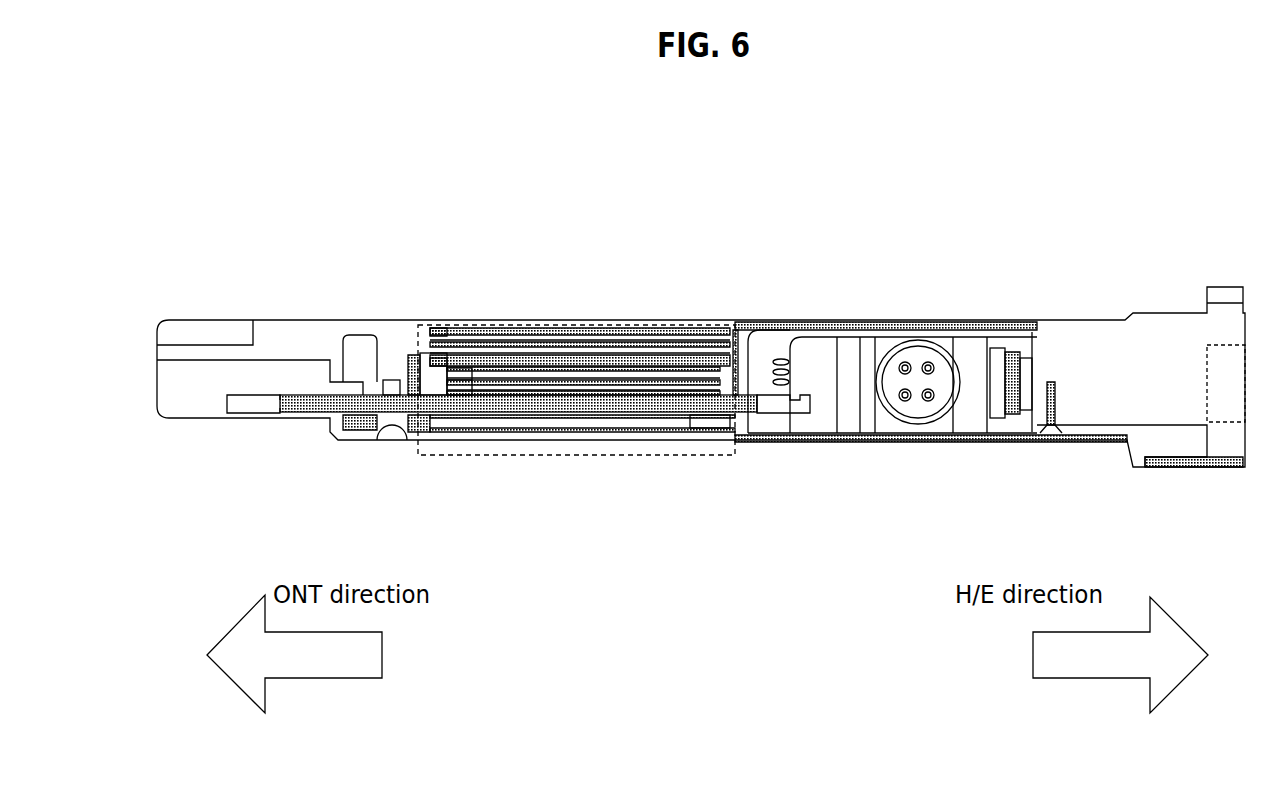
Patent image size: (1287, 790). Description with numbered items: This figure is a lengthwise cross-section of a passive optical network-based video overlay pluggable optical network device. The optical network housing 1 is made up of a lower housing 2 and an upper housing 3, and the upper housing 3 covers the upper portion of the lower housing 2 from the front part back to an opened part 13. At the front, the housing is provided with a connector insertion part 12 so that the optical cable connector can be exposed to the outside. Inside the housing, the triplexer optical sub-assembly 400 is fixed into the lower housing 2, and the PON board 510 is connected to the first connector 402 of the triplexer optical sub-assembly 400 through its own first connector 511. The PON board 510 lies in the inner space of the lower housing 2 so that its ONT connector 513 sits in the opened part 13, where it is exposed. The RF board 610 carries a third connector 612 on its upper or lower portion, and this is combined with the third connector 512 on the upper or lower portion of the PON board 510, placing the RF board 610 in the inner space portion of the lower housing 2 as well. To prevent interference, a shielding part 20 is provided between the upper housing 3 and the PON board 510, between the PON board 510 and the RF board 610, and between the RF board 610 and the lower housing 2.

The optical network housing 1 is at (1160, 265).
The lower housing 2 is at (1076, 348).
The upper housing 3 is at (903, 446).
The connector insertion part 12 is at (1222, 343).
The opened part 13 is at (210, 424).
The shielding part 20 is at (740, 323).
The triplexer optical sub-assembly 400 is at (898, 338).
The first connector 402 is at (781, 372).
The PON board 510 is at (614, 408).
The first connector 511 is at (784, 414).
The third connector 512 is at (450, 370).
The ONT connector 513 is at (258, 420).
The RF board 610 is at (516, 358).
The third connector 612 is at (438, 332).